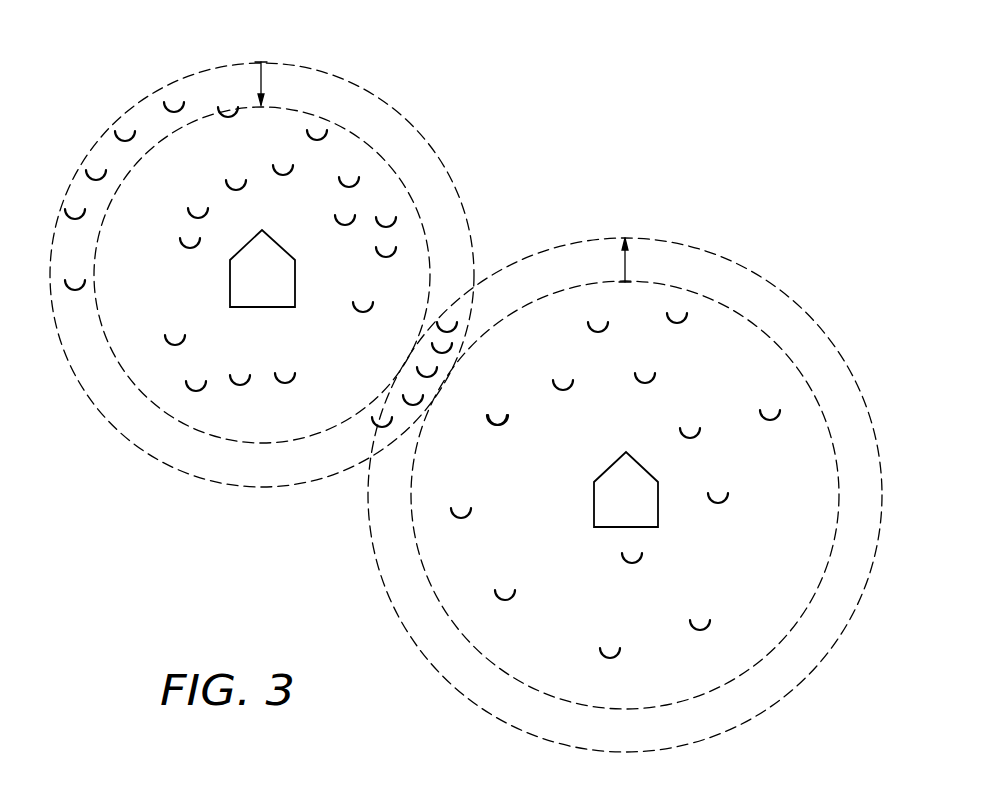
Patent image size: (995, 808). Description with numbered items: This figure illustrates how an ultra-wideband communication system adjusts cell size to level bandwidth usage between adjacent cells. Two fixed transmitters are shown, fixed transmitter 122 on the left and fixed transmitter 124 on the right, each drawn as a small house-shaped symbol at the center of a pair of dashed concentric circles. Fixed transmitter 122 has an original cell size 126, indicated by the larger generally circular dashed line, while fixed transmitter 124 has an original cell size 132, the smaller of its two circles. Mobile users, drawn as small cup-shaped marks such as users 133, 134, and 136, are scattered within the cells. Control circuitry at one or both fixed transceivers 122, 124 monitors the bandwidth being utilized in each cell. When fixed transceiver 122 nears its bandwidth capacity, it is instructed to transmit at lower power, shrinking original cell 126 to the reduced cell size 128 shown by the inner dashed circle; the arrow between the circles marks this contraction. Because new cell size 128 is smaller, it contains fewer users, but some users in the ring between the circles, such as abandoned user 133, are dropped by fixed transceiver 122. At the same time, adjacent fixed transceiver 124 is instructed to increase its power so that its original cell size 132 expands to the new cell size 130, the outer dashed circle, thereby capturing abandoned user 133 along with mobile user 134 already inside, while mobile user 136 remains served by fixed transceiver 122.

The fixed transmitter 122 is at (283, 296).
The fixed transmitter 124 is at (646, 516).
The original cell size 126 is at (420, 124).
The reduced cell size 128 is at (215, 437).
The new cell size 130 is at (680, 240).
The original cell size 132 is at (778, 340).
The abandoned user 133 is at (432, 370).
The mobile user 134 is at (466, 518).
The mobile user 136 is at (190, 246).